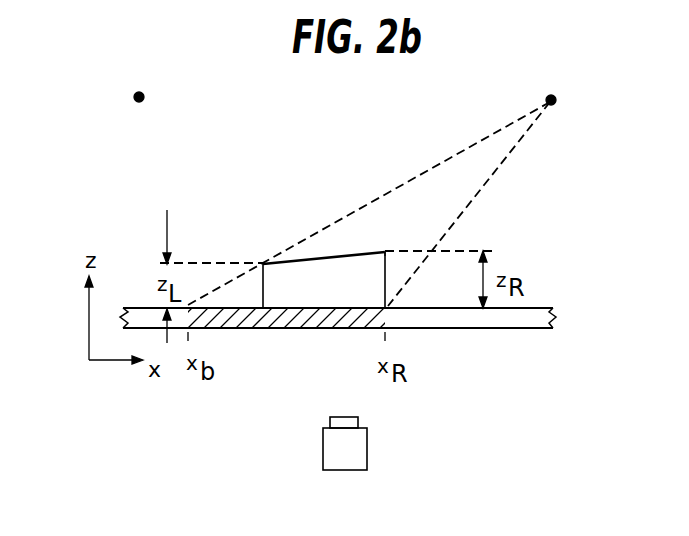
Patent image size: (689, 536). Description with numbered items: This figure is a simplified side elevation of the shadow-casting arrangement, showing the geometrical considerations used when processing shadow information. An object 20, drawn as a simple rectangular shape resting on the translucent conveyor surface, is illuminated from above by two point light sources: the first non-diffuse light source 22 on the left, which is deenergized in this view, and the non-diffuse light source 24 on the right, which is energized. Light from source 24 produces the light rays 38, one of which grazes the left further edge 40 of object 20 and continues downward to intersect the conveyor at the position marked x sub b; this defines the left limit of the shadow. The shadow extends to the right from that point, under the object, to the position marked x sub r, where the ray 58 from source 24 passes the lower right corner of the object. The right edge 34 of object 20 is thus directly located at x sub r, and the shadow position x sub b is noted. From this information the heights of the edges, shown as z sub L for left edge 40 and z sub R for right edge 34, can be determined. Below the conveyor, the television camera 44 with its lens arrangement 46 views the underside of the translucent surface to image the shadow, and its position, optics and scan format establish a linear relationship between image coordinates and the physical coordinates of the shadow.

The object 20 is at (338, 255).
The first non-diffuse light source 22 is at (133, 96).
The non-diffuse light source 24 is at (556, 103).
The edge 34 is at (386, 252).
The light rays 38 is at (413, 176).
The further edge 40 is at (263, 264).
The television camera 44 is at (323, 452).
The lens arrangement 46 is at (360, 420).
The ray 58 is at (475, 193).